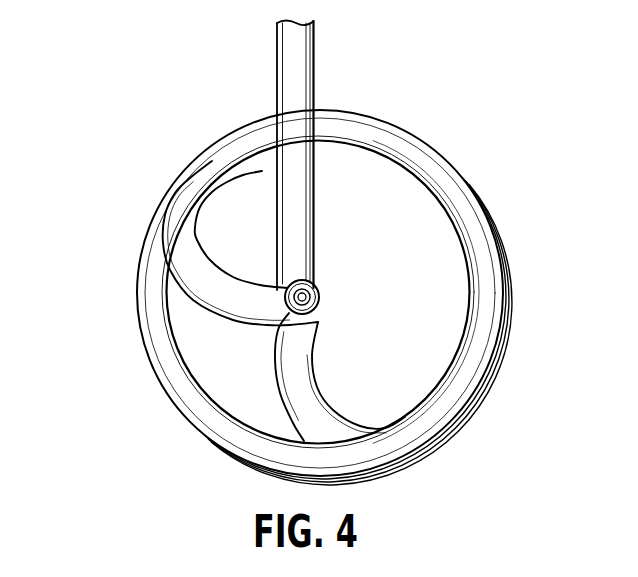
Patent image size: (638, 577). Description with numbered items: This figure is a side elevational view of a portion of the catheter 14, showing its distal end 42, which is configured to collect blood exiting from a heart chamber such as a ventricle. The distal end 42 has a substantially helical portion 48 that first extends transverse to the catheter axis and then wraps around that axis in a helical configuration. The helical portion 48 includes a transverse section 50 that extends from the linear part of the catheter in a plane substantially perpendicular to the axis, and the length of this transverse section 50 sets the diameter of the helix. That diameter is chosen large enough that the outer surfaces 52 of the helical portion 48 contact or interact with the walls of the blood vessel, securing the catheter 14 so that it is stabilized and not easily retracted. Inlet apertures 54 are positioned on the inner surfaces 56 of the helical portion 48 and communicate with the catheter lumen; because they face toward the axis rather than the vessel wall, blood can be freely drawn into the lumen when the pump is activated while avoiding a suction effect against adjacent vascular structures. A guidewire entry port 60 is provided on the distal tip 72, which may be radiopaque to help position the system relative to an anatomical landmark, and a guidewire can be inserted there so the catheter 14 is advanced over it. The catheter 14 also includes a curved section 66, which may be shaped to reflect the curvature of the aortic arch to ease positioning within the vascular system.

The catheter 14 is at (100, 183).
The distal end 42 is at (326, 279).
The helical portion 48 is at (135, 315).
The transverse section 50 is at (321, 394).
The outer surfaces 52 is at (423, 143).
The inlet apertures 54 is at (228, 180).
The inner surfaces 56 is at (192, 362).
The guidewire entry port 60 is at (310, 297).
The curved section 66 is at (315, 76).
The distal tip 72 is at (318, 308).